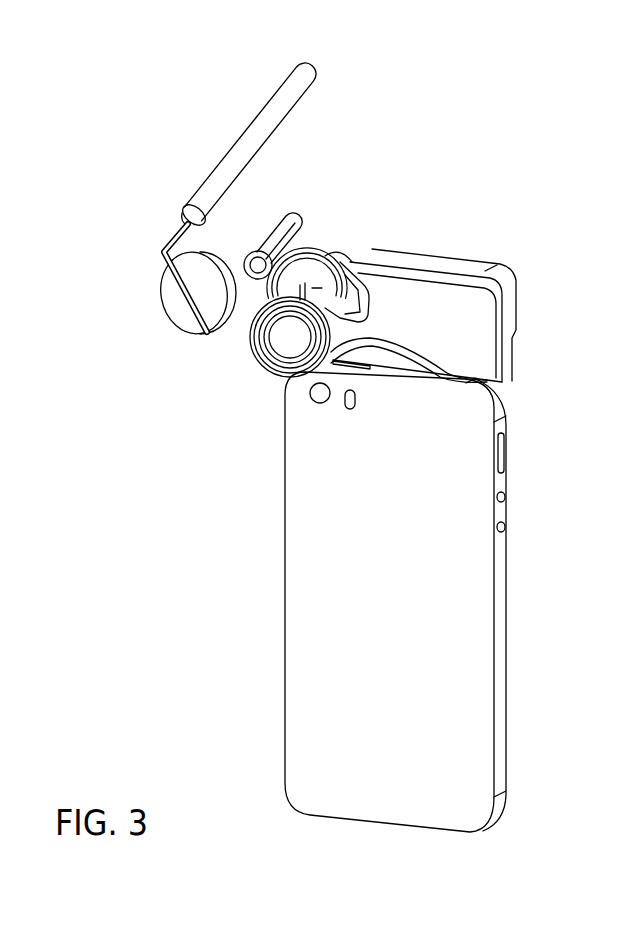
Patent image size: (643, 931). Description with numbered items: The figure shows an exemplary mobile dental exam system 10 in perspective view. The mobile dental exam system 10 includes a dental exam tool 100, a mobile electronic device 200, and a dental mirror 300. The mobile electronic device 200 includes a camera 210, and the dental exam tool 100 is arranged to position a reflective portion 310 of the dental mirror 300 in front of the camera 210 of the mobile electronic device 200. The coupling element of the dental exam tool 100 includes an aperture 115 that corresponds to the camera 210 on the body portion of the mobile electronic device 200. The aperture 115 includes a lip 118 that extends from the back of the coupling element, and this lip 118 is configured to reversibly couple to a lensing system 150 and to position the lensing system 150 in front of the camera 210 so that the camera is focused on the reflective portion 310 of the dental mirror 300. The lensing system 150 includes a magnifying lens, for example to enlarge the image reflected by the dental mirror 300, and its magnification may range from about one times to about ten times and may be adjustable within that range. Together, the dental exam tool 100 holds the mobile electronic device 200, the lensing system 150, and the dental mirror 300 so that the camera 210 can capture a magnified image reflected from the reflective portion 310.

The mobile dental exam system 10 is at (492, 168).
The dental exam tool 100 is at (516, 269).
The aperture 115 is at (270, 257).
The lip 118 is at (337, 256).
The lensing system 150 is at (252, 360).
The mobile electronic device 200 is at (510, 496).
The camera 210 is at (313, 398).
The dental mirror 300 is at (262, 150).
The reflective portion 310 is at (170, 300).